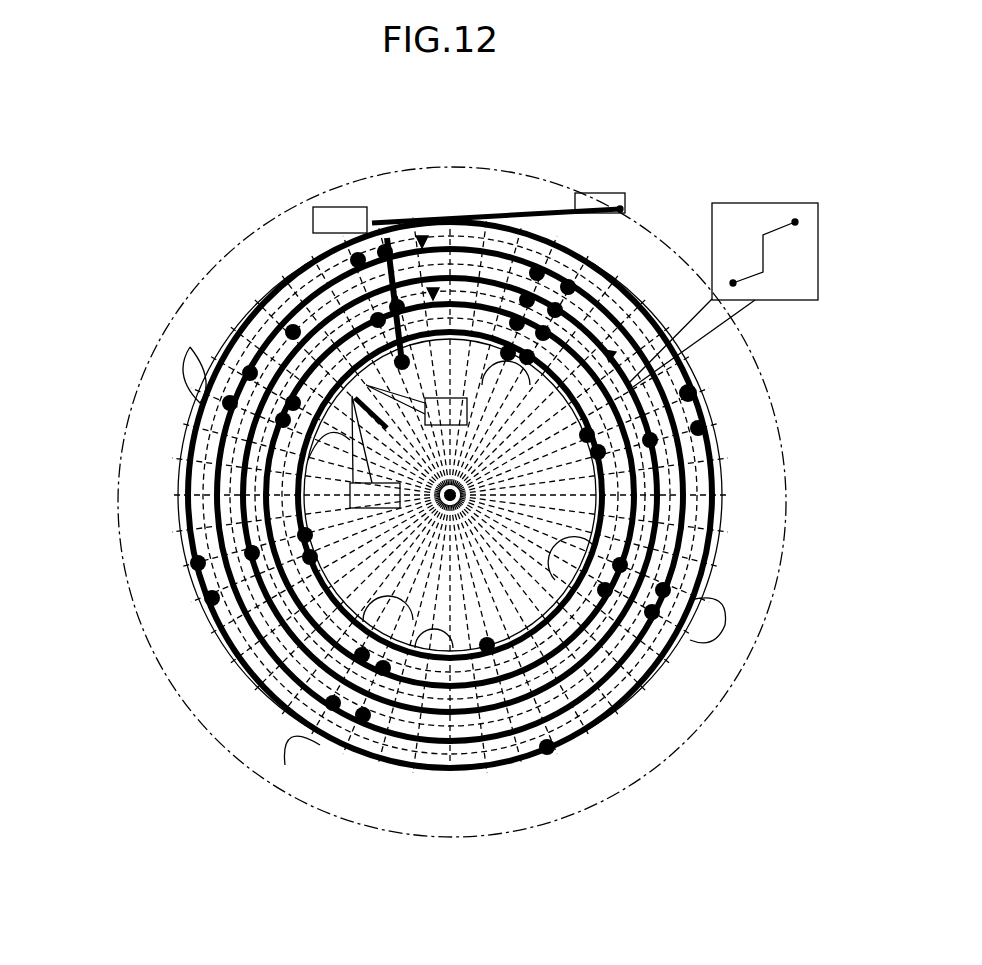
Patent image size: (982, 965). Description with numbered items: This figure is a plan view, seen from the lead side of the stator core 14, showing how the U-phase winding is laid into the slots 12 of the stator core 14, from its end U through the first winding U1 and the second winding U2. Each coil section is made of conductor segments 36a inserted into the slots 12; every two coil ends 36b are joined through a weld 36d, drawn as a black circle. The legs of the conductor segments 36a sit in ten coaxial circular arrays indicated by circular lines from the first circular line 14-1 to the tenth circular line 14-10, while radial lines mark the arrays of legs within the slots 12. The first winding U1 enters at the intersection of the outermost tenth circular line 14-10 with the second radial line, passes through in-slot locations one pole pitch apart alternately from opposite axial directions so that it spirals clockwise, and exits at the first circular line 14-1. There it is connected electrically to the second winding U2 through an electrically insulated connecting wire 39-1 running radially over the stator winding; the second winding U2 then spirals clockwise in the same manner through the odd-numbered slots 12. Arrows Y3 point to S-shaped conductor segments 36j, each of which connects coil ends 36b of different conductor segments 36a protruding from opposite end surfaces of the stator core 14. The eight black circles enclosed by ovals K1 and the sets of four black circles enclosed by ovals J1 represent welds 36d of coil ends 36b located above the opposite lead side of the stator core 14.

The slot 12 is at (182, 458).
The stator core 14 is at (294, 200).
The first circular line 14-1 is at (463, 773).
The tenth circular line 14-10 is at (268, 735).
The conductor segment 36a is at (718, 478).
The coil end 36b is at (490, 380).
The weld 36d is at (200, 599).
The S-shaped conductor segment 36j is at (770, 233).
The connecting wire 39-1 is at (362, 281).
The oval J1 is at (186, 365).
The arrow Y3 is at (432, 292).
The end of U-phase winding U is at (484, 350).
The first winding U1 is at (533, 203).
The second winding U2 is at (463, 222).
The oval K1 is at (597, 255).